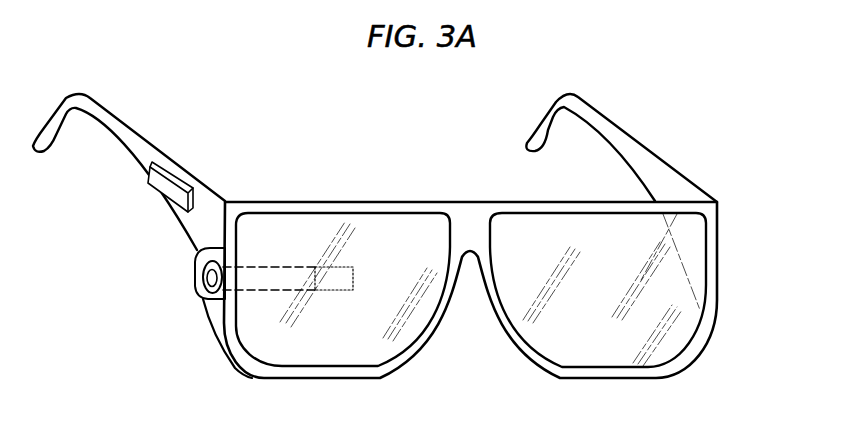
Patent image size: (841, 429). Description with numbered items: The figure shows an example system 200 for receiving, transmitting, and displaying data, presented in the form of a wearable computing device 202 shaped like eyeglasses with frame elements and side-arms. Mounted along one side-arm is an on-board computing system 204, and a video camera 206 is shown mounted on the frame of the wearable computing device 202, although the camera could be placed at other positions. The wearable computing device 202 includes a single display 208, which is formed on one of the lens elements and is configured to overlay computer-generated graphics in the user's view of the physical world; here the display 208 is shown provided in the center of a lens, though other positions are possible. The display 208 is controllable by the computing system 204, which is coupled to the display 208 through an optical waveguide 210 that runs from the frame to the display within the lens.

The system 200 is at (694, 151).
The wearable computing device 202 is at (726, 298).
The on-board computing system 204 is at (160, 185).
The video camera 206 is at (195, 290).
The display 208 is at (335, 291).
The optical waveguide 210 is at (246, 267).